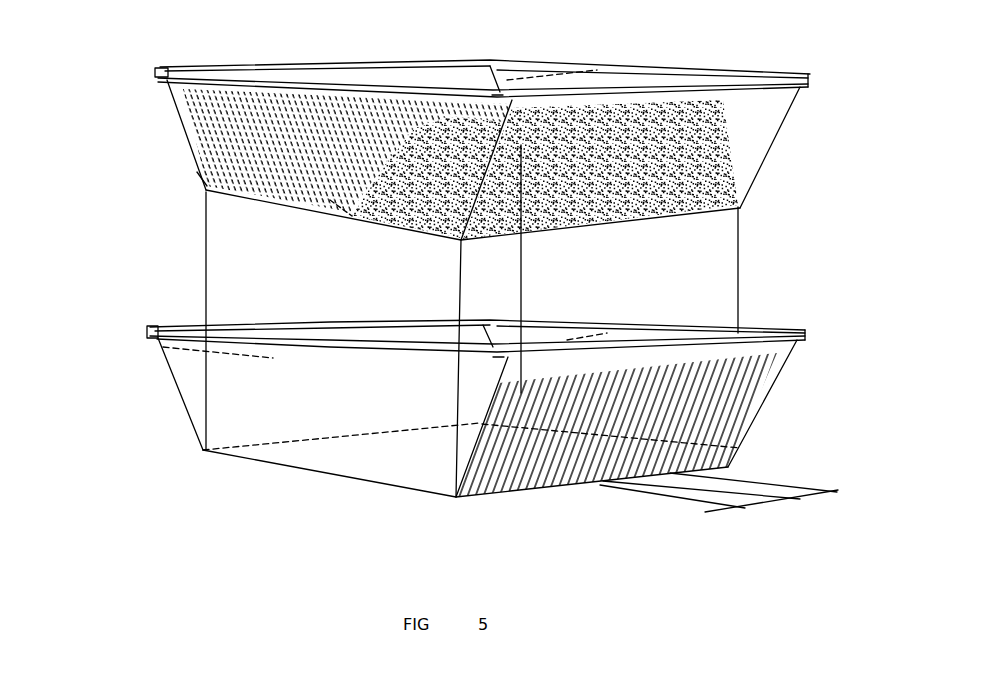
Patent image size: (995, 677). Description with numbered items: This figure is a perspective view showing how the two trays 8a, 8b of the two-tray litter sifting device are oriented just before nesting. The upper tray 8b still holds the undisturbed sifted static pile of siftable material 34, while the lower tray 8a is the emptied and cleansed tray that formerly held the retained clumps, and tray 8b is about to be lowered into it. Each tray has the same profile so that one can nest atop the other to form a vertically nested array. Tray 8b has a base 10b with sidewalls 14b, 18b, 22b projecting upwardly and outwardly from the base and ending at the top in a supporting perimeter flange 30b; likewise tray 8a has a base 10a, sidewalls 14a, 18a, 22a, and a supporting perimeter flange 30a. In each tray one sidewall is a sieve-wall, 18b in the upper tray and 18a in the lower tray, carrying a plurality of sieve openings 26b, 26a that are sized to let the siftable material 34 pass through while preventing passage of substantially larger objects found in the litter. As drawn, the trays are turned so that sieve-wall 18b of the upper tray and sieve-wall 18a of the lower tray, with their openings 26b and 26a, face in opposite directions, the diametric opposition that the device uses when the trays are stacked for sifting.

The tray 8a is at (460, 418).
The tray 8b is at (459, 161).
The base 10a is at (417, 472).
The base 10b is at (332, 202).
The sidewall 14a is at (607, 327).
The sidewall 14b is at (600, 71).
The sieve-wall 18a is at (692, 402).
The sieve-wall 18b is at (173, 98).
The sidewall 22a is at (157, 349).
The sidewall 22b is at (760, 137).
The sieve openings 26a is at (760, 496).
The sieve openings 26b is at (205, 183).
The supporting perimeter flange 30a is at (147, 330).
The supporting perimeter flange 30b is at (155, 73).
The siftable material 34 is at (603, 170).